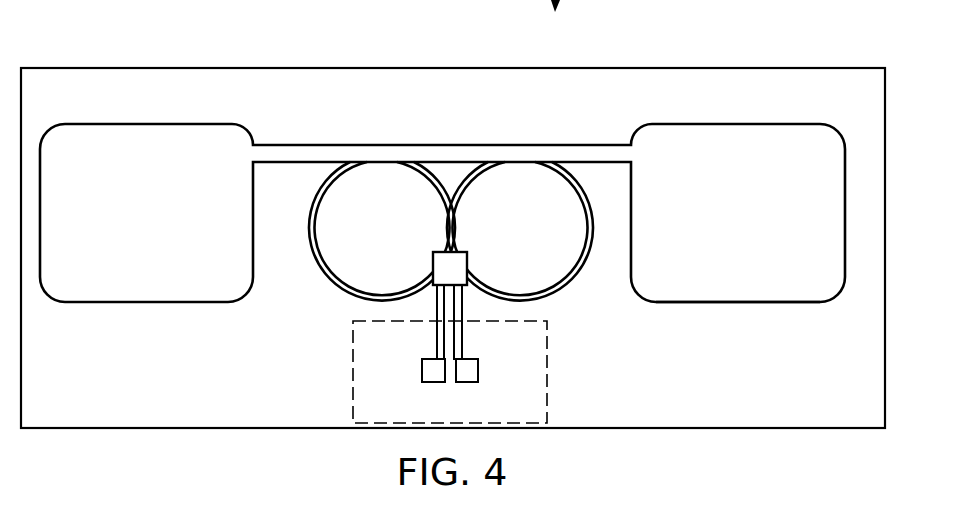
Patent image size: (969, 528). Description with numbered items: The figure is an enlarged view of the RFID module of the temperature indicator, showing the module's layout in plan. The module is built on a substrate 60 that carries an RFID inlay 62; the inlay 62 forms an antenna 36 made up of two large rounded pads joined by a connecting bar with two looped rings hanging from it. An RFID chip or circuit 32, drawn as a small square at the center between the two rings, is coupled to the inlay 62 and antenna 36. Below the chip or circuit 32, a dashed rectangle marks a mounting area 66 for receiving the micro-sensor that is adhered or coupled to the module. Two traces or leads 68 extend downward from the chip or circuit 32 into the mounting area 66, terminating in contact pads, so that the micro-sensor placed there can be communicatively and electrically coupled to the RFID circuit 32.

The substrate 60 is at (287, 68).
The antenna 36 is at (737, 292).
The RFID inlay 62 is at (782, 308).
The RFID chip or circuit 32 is at (448, 262).
The mounting area 66 is at (353, 383).
The traces or leads 68 is at (478, 370).